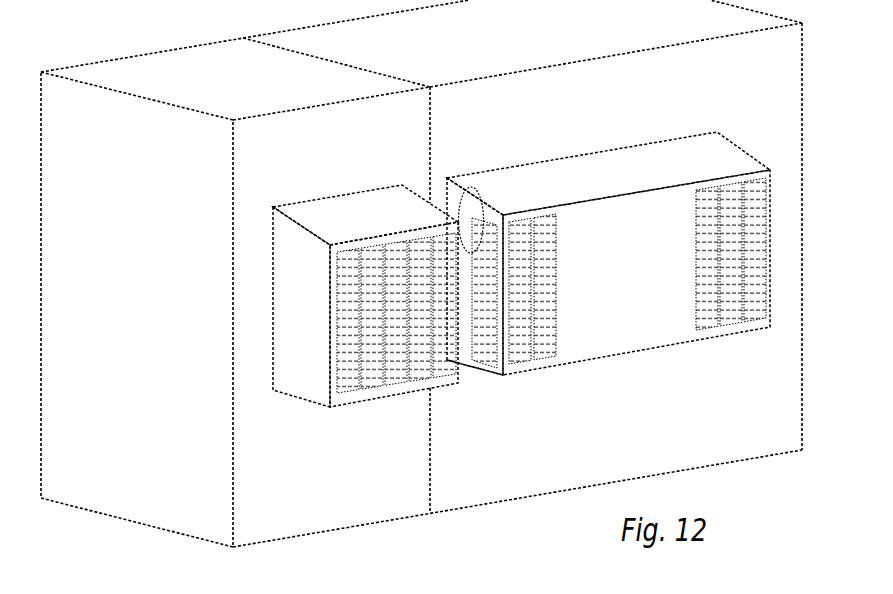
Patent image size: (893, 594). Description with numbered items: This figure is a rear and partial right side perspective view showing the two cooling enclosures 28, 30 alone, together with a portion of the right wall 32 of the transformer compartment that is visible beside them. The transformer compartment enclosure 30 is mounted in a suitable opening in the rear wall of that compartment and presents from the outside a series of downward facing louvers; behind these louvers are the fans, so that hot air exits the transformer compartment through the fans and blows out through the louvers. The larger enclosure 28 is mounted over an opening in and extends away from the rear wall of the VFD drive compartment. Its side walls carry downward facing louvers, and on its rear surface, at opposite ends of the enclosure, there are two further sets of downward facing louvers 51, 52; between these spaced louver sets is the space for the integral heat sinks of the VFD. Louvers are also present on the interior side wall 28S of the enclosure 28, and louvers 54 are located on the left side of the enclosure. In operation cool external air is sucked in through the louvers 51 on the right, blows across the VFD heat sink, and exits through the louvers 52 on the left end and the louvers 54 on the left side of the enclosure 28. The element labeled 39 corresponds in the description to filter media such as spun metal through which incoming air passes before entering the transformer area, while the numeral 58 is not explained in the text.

The right wall 32 is at (174, 400).
The transformer compartment enclosure 30 is at (360, 233).
The front grille of first unit 58 is at (373, 247).
The enclosure 28 is at (630, 180).
The interior side wall 28S is at (447, 178).
The louvers 54 is at (483, 200).
The louvers 52 is at (547, 220).
The louvers 51 is at (727, 185).
The filter media 39 is at (476, 388).